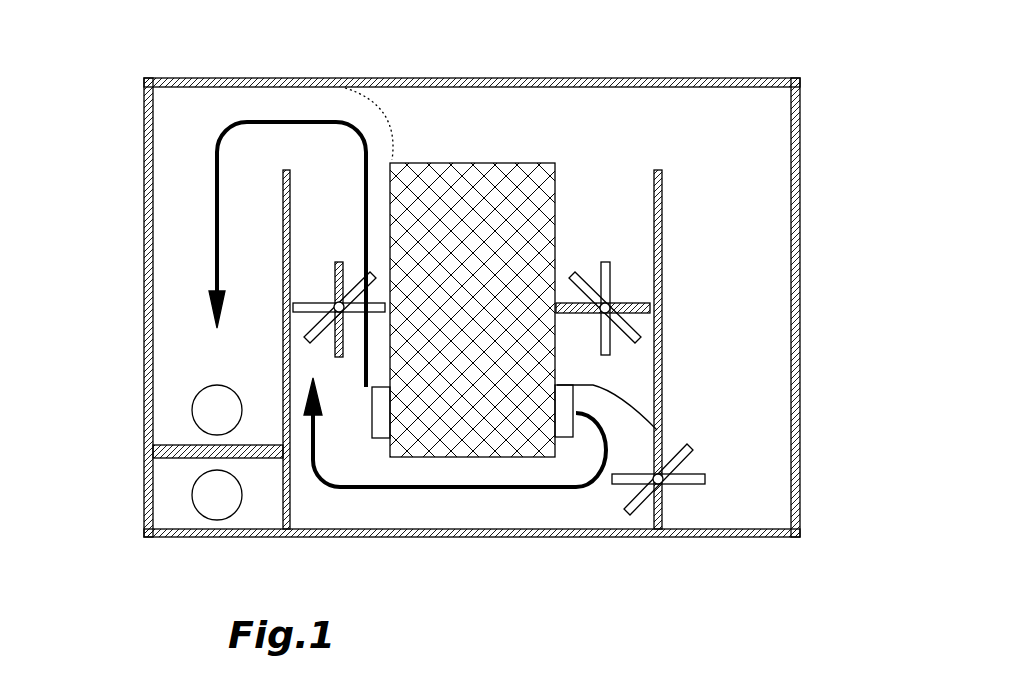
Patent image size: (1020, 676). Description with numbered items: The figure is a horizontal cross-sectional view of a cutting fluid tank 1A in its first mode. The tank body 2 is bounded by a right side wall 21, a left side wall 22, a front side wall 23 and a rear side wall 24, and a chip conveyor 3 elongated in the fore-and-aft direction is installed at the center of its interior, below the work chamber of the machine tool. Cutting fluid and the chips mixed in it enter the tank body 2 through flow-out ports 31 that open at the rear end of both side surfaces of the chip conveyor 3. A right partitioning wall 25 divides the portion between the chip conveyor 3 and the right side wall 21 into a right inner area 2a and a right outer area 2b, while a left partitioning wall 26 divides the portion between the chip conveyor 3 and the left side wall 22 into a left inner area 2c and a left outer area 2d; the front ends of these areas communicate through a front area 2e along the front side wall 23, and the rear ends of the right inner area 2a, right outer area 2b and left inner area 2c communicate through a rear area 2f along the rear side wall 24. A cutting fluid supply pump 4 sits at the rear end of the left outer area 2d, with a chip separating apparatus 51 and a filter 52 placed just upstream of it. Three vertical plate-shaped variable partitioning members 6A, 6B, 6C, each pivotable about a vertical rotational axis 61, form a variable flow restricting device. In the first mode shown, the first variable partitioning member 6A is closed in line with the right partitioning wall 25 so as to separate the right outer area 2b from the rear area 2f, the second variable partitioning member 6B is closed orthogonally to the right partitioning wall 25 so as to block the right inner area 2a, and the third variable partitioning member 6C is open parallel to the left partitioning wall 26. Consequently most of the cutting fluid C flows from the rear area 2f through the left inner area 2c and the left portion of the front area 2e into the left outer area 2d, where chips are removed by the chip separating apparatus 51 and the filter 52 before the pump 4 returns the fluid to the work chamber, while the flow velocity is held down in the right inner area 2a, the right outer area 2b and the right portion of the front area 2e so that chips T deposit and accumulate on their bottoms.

The cutting fluid tank 1A is at (569, 73).
The tank body 2 is at (800, 308).
The right side wall 21 is at (800, 216).
The left side wall 22 is at (144, 216).
The front side wall 23 is at (453, 78).
The rear side wall 24 is at (470, 537).
The right partitioning wall 25 is at (662, 202).
The left partitioning wall 26 is at (283, 222).
The right inner area 2a is at (628, 225).
The right outer area 2b is at (714, 350).
The left inner area 2c is at (310, 212).
The left outer area 2d is at (164, 268).
The front area 2e is at (497, 141).
The rear area 2f is at (514, 522).
The chip conveyor 3 is at (415, 438).
The flow-out ports 31 is at (370, 437).
The cutting fluid supply pump 4 is at (214, 505).
The chip separating apparatus 51 is at (207, 410).
The filter 52 is at (183, 446).
The first variable partitioning member 6A is at (653, 513).
The second variable partitioning member 6B is at (630, 303).
The third variable partitioning member 6C is at (340, 348).
The vertical rotational axis 61 is at (335, 304).
The cutting fluid C is at (216, 172).
The chips T is at (747, 421).